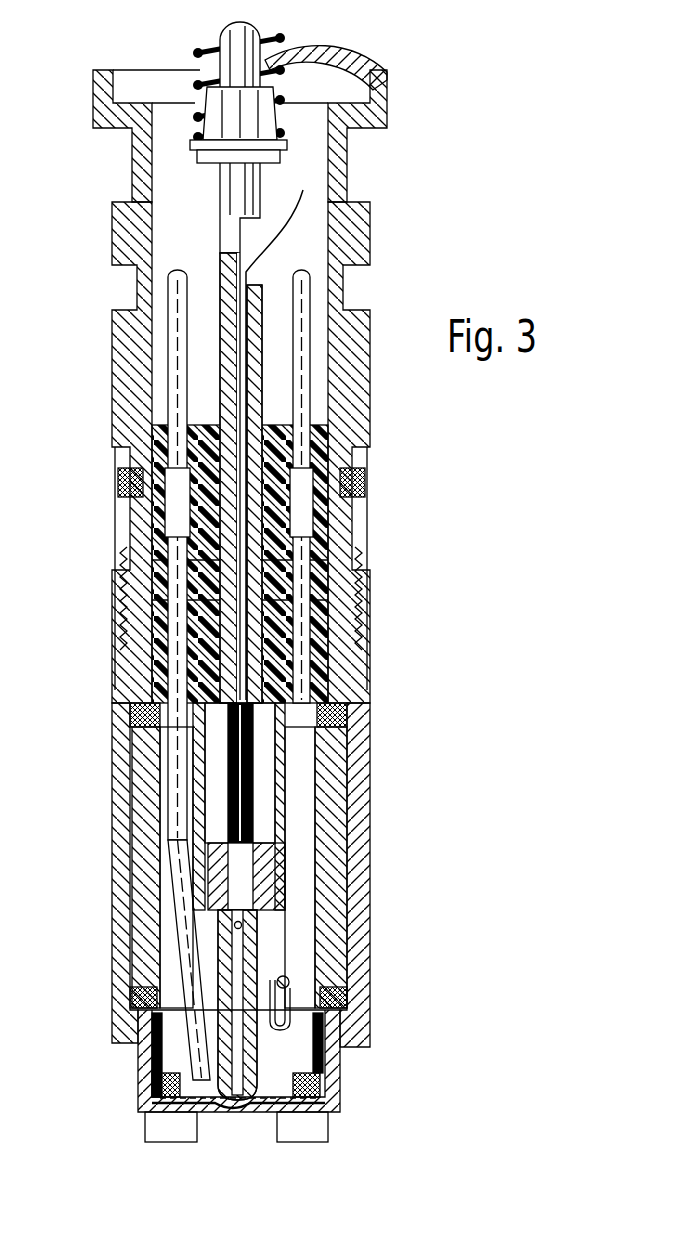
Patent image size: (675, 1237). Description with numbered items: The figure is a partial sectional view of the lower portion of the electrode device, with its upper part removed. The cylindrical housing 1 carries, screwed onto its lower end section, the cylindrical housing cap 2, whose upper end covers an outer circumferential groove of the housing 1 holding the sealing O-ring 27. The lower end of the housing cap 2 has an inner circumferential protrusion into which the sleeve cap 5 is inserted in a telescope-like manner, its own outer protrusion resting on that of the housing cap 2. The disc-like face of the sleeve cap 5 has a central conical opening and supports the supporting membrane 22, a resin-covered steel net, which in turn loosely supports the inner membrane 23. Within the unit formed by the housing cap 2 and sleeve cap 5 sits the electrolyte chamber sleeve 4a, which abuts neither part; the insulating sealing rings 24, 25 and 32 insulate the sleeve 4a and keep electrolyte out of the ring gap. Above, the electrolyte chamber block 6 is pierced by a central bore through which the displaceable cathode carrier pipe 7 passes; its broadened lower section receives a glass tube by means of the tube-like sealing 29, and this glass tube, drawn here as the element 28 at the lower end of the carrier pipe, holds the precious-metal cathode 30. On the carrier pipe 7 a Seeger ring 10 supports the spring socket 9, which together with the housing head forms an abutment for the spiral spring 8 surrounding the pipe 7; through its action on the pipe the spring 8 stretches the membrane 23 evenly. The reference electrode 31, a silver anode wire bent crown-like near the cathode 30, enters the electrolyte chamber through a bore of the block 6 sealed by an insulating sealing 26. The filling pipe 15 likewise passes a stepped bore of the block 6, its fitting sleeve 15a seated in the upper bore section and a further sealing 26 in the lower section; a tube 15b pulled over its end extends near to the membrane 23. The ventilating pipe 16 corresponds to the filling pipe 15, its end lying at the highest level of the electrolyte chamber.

The cylindrical housing 1 is at (382, 115).
The cylindrical housing cap 2 is at (360, 717).
The electrolyte chamber sleeve 4a is at (325, 833).
The sleeve cap 5 is at (333, 1082).
The electrolyte chamber block 6 is at (337, 573).
The cathode carrier pipe 7 is at (255, 182).
The spiral spring 8 is at (287, 40).
The spring socket 9 is at (212, 108).
The Seeger ring 10 is at (203, 157).
The filling pipe 15 is at (177, 352).
The fitting sleeve 15a is at (155, 466).
The tube 15b is at (175, 830).
The ventilating pipe 16 is at (300, 295).
The supporting membrane 22 is at (233, 1108).
The inner membrane 23 is at (150, 1080).
The insulating sealing ring 24 is at (150, 1068).
The insulating sealing ring 25 is at (135, 720).
The insulating sealing 26 is at (330, 620).
The sealing O-ring 27 is at (118, 488).
The electrode 28 is at (285, 740).
The tube-like sealing 29 is at (285, 877).
The cathode 30 is at (258, 933).
The reference electrode 31 is at (282, 998).
The insulating sealing ring 32 is at (343, 1037).